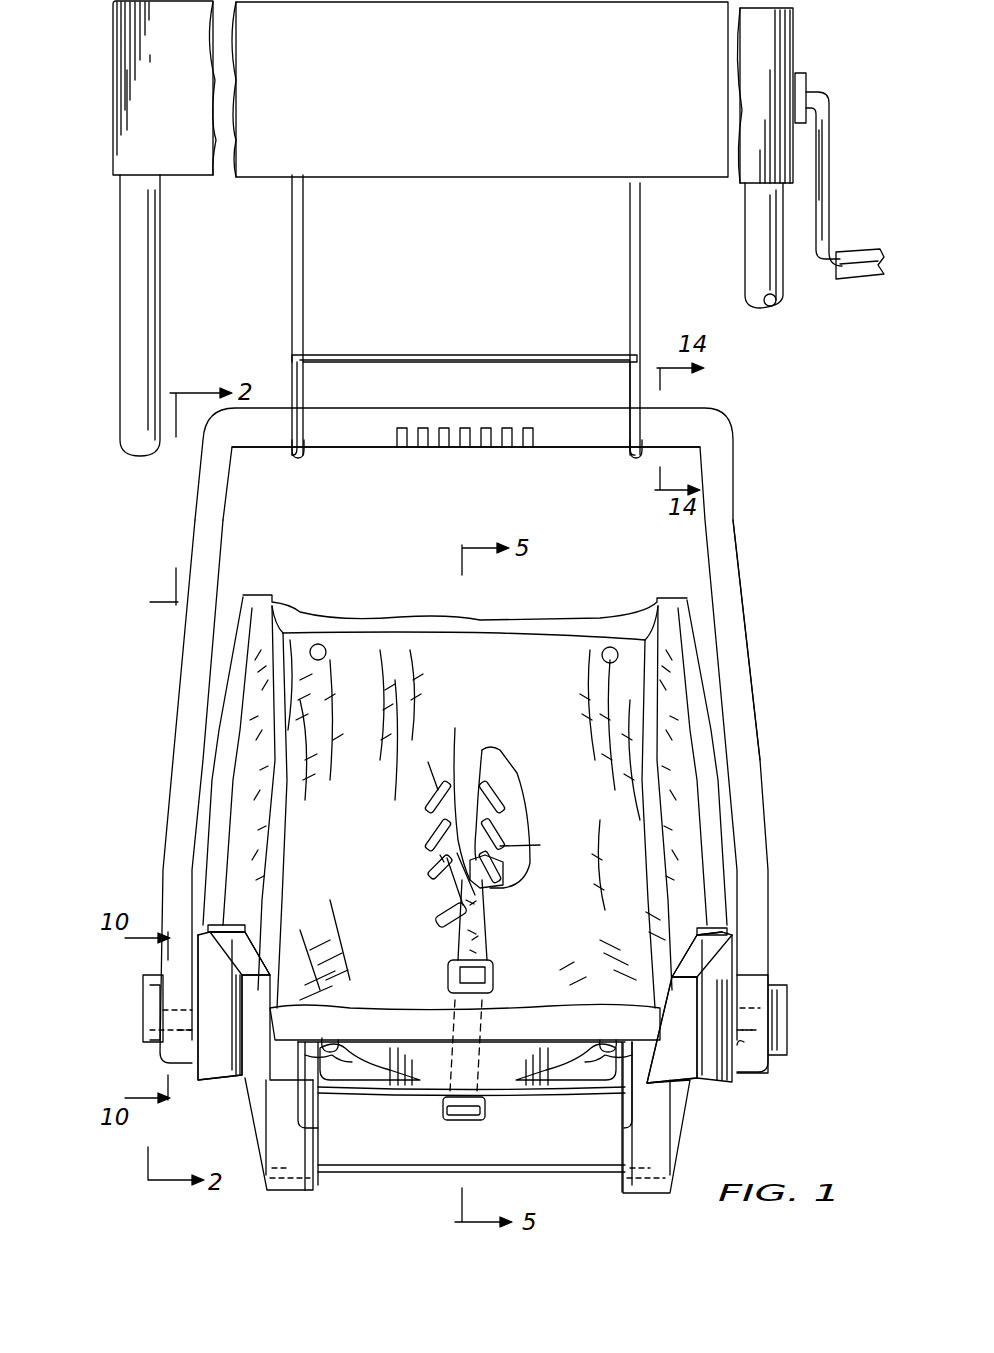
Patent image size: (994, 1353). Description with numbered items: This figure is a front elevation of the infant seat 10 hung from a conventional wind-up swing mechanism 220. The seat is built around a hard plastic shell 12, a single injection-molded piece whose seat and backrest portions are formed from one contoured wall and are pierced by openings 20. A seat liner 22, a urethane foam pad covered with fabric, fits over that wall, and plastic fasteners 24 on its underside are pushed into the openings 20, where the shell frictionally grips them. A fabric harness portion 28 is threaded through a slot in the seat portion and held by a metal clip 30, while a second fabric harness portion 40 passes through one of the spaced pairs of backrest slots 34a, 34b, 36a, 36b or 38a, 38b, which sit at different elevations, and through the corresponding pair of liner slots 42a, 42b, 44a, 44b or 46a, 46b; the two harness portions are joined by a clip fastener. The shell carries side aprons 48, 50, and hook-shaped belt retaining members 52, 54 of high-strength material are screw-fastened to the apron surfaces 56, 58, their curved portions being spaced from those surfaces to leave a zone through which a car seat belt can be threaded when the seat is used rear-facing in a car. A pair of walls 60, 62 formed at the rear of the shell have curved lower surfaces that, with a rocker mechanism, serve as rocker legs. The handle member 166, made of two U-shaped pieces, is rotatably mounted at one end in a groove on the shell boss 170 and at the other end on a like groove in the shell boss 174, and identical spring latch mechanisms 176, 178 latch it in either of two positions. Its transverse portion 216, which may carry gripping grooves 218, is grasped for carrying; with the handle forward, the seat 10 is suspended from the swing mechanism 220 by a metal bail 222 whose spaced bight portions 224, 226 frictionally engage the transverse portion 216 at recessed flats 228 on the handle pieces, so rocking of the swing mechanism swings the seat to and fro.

The infant seat 10 is at (741, 440).
The hard plastic shell 12 is at (685, 600).
The openings 20 is at (318, 644).
The seat liner 22 is at (478, 675).
The plastic fasteners 24 is at (328, 1062).
The fabric harness portion 28 is at (487, 1035).
The metal clip 30 is at (480, 1118).
The backrest slot 34a is at (416, 763).
The backrest slot 34b is at (505, 770).
The backrest slot 36a is at (428, 852).
The backrest slot 36b is at (505, 830).
The backrest slot 38a is at (432, 880).
The backrest slot 38b is at (505, 875).
The second fabric harness portion 40 is at (480, 928).
The liner slot 42a is at (430, 806).
The liner slot 42b is at (480, 780).
The liner slot 44a is at (428, 836).
The liner slot 44b is at (454, 789).
The liner slot 46a is at (440, 892).
The liner slot 46b is at (529, 858).
The side apron 48 is at (227, 1067).
The side apron 50 is at (716, 1082).
The belt retaining member 52 is at (235, 925).
The belt retaining member 54 is at (735, 932).
The apron surface 56 is at (245, 958).
The apron surface 58 is at (705, 957).
The wall 60 is at (258, 1122).
The wall 62 is at (678, 1130).
The handle member 166 is at (746, 568).
The shell boss 170 is at (195, 1035).
The shell boss 174 is at (740, 1048).
The spring latch mechanism 176 is at (140, 1000).
The spring latch mechanism 178 is at (785, 1015).
The transverse portion 216 is at (575, 455).
The grooves 218 is at (468, 452).
The swing mechanism 220 is at (500, 150).
The metal bail 222 is at (641, 262).
The bight portion 224 is at (288, 375).
The bight portion 226 is at (628, 393).
The recessed flats 228 is at (305, 445).